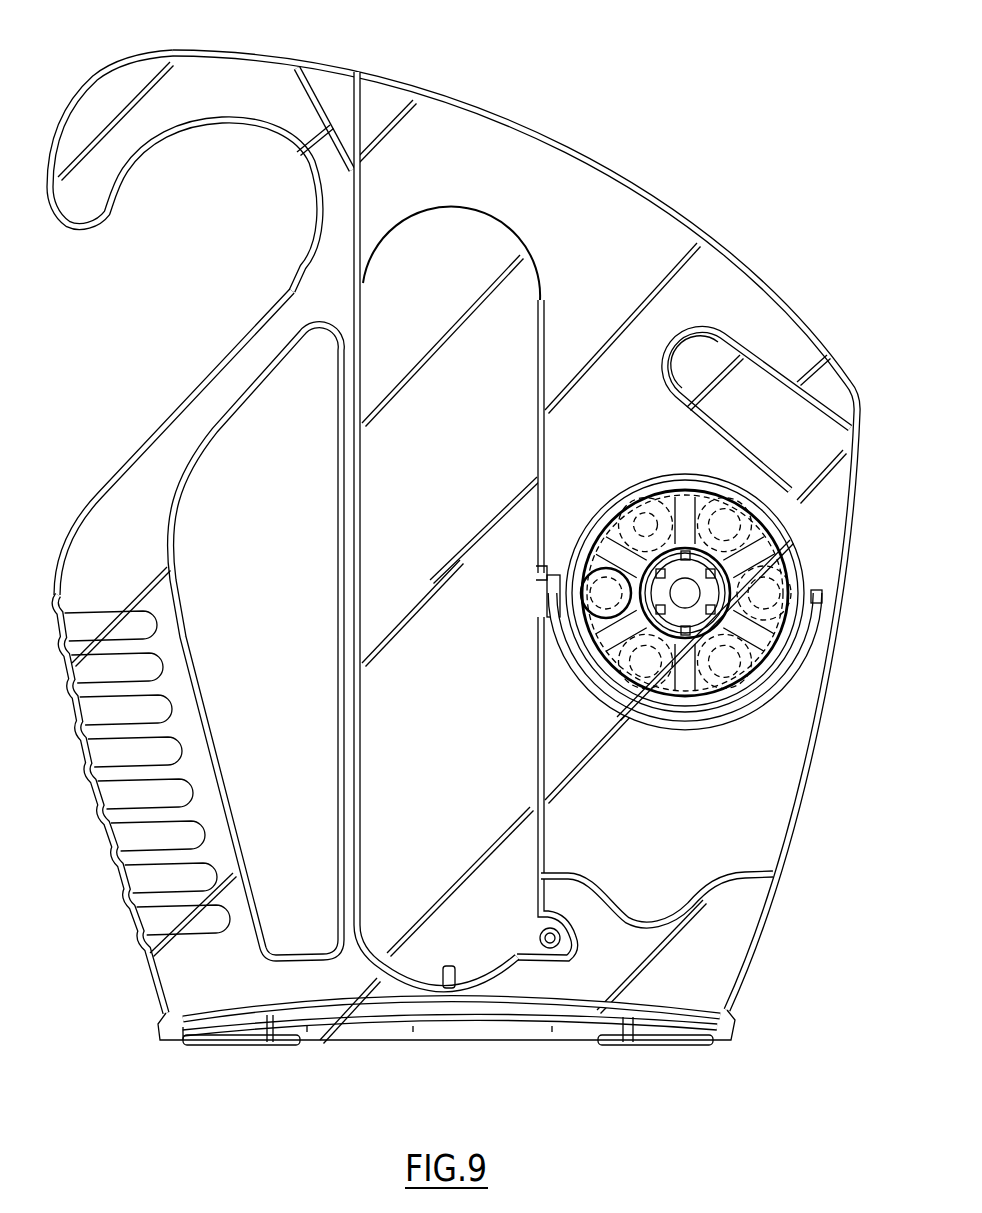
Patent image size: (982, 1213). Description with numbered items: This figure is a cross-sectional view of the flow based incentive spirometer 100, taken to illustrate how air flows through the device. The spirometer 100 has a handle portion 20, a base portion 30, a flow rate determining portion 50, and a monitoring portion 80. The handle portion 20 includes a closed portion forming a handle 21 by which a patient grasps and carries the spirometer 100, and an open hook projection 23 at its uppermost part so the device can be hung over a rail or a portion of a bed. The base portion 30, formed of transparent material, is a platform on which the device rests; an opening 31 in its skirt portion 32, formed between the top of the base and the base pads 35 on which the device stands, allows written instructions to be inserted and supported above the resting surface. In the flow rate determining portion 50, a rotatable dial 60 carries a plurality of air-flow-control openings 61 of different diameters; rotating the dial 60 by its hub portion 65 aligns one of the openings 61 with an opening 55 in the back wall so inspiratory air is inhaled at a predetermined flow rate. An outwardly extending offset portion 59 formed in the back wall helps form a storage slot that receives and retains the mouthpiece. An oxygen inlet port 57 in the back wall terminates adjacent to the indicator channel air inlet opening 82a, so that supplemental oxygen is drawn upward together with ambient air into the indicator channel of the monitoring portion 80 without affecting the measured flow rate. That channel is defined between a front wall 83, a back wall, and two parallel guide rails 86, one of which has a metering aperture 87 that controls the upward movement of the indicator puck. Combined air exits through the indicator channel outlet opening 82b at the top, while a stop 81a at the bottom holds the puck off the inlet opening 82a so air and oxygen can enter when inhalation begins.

The flow based incentive spirometer 100 is at (540, 100).
The handle portion 20 is at (150, 430).
The handle 21 is at (146, 574).
The open hook projection 23 is at (97, 172).
The base portion 30 is at (540, 1083).
The opening 31 is at (618, 1046).
The skirt portion 32 is at (363, 1020).
The base pads 35 is at (220, 1046).
The flow rate determining portion 50 is at (705, 780).
The opening 55 is at (547, 616).
The oxygen inlet port 57 is at (562, 947).
The offset portion 59 is at (792, 434).
The dial 60 is at (805, 571).
The air-flow-control openings 61 is at (607, 573).
The hub portion 65 is at (672, 545).
The monitoring portion 80 is at (518, 318).
The stop 81a is at (447, 963).
The indicator channel air inlet opening 82a is at (393, 957).
The indicator channel outlet opening 82b is at (496, 226).
The front wall 83 is at (468, 821).
The guide rails 86 is at (538, 418).
The metering aperture 87 is at (538, 578).